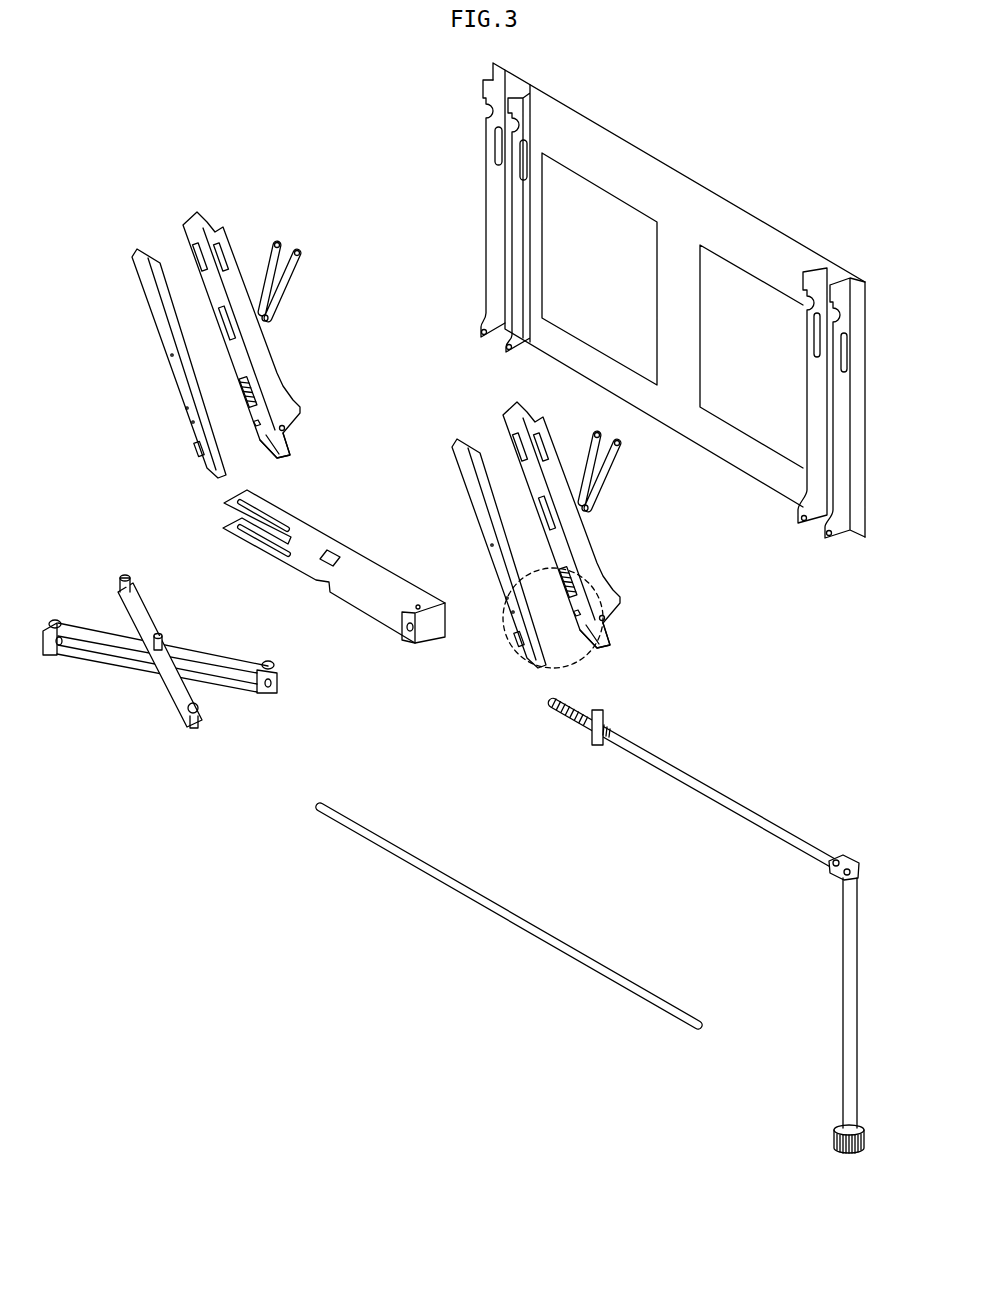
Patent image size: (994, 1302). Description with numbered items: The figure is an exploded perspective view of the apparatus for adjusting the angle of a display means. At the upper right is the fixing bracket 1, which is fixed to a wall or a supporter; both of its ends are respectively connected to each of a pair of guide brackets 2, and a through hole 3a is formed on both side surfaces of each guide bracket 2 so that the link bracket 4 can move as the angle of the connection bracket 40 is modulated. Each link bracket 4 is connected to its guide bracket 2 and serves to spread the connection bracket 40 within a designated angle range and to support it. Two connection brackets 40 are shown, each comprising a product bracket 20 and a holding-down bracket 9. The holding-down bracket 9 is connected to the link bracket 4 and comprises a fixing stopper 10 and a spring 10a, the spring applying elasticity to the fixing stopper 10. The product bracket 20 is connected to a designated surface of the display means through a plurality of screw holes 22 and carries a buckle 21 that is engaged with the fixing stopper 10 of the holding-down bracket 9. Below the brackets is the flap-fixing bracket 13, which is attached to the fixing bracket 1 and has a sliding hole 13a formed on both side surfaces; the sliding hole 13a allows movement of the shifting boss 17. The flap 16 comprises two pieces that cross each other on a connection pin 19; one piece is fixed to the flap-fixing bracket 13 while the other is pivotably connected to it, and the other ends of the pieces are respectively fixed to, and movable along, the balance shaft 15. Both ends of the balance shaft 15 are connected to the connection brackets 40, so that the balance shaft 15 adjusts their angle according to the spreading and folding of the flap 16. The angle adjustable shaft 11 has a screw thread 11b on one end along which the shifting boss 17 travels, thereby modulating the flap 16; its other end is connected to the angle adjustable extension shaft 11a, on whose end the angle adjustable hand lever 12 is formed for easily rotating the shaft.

The fixing bracket 1 is at (688, 193).
The guide bracket 2 is at (523, 106).
The through hole 3a is at (846, 346).
The link bracket 4 is at (273, 273).
The holding-down bracket 9 is at (260, 367).
The fixing stopper 10 is at (278, 448).
The spring 10a is at (257, 407).
The angle adjustable shaft 11 is at (668, 757).
The angle adjustable extension shaft 11a is at (845, 975).
The screw thread 11b is at (566, 703).
The angle adjustable hand lever 12 is at (833, 1141).
The flap-fixing bracket 13 is at (352, 570).
The sliding hole 13a is at (272, 512).
The balance shaft 15 is at (488, 896).
The flap 16 is at (148, 616).
The shifting boss 17 is at (592, 730).
The connection pin 19 is at (162, 638).
The product bracket 20 is at (178, 342).
The buckle 21 is at (193, 448).
The screw hole 22 is at (147, 272).
The connection bracket 40 is at (449, 430).